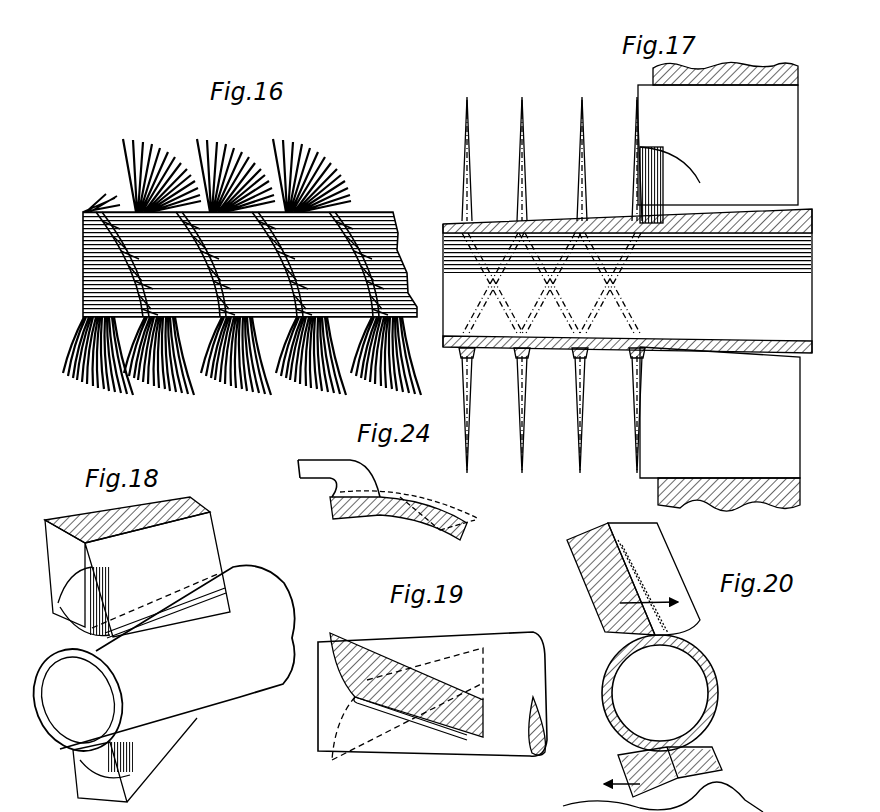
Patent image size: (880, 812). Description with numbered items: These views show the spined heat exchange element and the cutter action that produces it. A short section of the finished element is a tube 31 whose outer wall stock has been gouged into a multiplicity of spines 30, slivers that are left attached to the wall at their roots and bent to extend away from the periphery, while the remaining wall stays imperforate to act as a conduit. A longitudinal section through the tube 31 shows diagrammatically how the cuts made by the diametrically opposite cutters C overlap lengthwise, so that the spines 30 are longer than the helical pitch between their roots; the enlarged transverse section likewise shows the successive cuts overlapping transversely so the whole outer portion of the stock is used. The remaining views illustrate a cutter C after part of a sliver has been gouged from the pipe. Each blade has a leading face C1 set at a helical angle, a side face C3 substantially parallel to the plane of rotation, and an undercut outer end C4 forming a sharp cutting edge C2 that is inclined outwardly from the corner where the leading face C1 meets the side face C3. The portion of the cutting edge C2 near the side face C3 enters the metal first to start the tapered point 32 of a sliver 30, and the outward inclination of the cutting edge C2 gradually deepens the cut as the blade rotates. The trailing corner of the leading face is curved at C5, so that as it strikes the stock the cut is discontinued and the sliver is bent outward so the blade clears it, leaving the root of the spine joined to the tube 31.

In FIG. 16, the spines 30 is at (305, 390).
In FIG. 17, the spines 30 is at (523, 196).
In FIG. 24, the spines 30 is at (303, 480).
In FIG. 18, the spines 30 is at (165, 622).
In FIG. 19, the spines 30 is at (427, 722).
In FIG. 16, the tube 31 is at (83, 288).
In FIG. 17, the tube 31 is at (717, 222).
In FIG. 24, the tube 31 is at (404, 521).
In FIG. 18, the tube 31 is at (285, 605).
In FIG. 19, the tube 31 is at (547, 745).
In FIG. 20, the tube 31 is at (722, 685).
In FIG. 18, the tapered point 32 is at (222, 586).
In FIG. 20, the tapered point 32 is at (693, 617).
In FIG. 17, the cutter C is at (719, 286).
In FIG. 18, the cutter C is at (137, 649).
In FIG. 19, the cutter C is at (367, 656).
In FIG. 20, the cutter C is at (588, 575).
In FIG. 17, the leading face C1 is at (759, 116).
In FIG. 18, the leading face C1 is at (156, 600).
In FIG. 19, the leading face C1 is at (470, 740).
In FIG. 20, the leading face C1 is at (673, 580).
In FIG. 18, the cutting edge C2 is at (193, 625).
In FIG. 20, the cutting edge C2 is at (690, 633).
In FIG. 18, the side face C3 is at (178, 517).
In FIG. 19, the side face C3 is at (487, 716).
In FIG. 18, the undercut outer end C4 is at (70, 635).
In FIG. 17, the curved trailing corner C5 is at (661, 180).
In FIG. 18, the curved trailing corner C5 is at (72, 609).
In FIG. 19, the curved trailing corner C5 is at (342, 683).